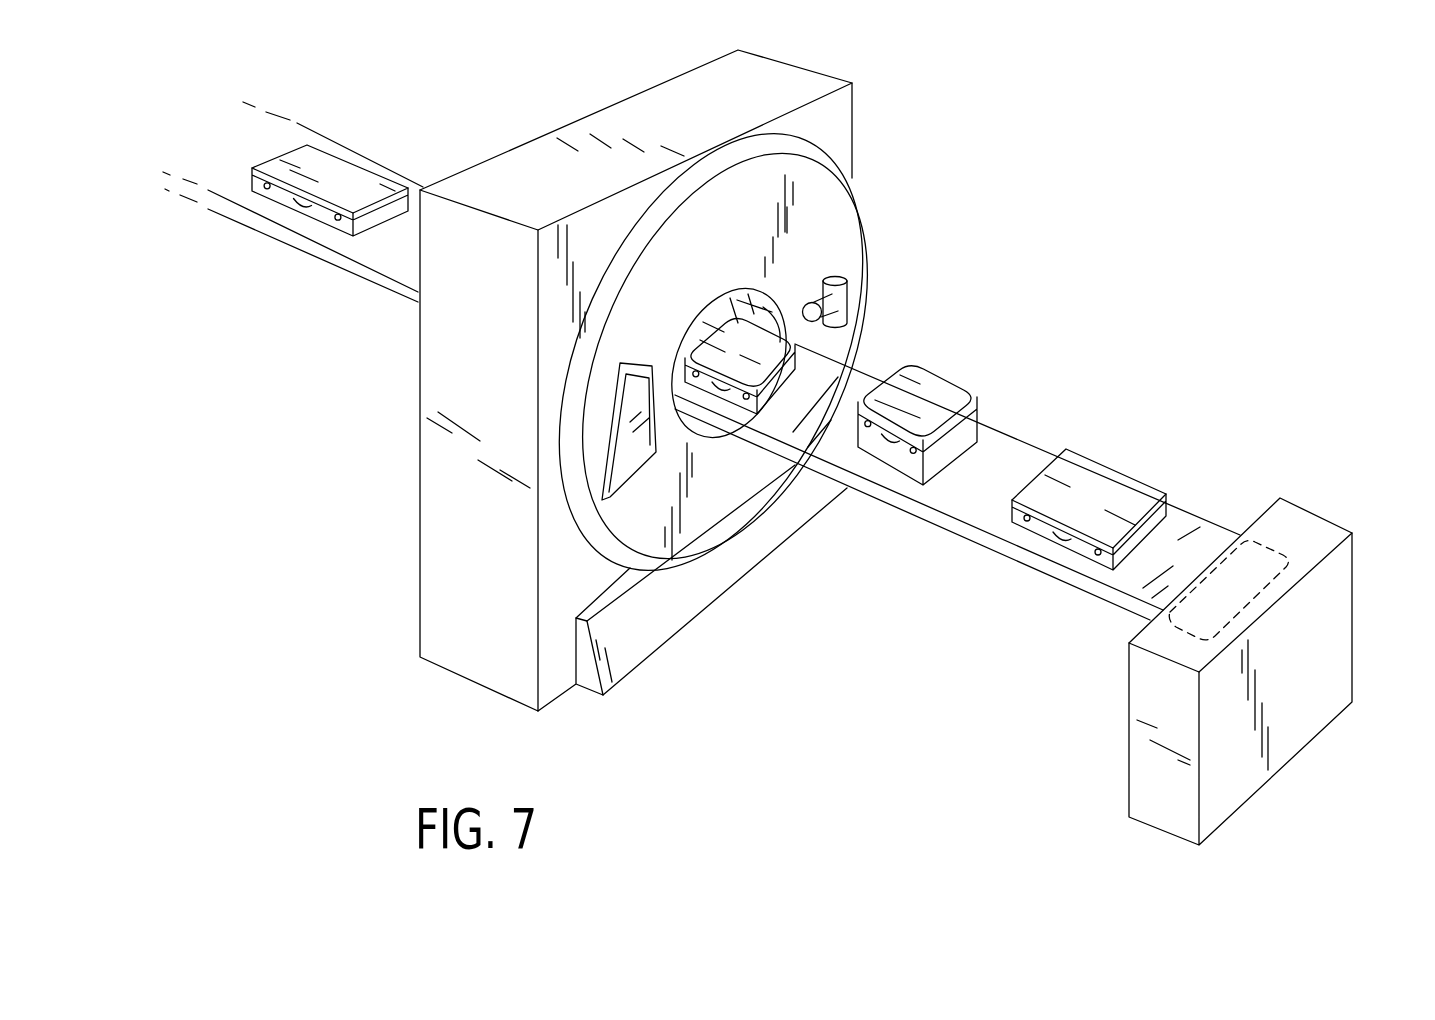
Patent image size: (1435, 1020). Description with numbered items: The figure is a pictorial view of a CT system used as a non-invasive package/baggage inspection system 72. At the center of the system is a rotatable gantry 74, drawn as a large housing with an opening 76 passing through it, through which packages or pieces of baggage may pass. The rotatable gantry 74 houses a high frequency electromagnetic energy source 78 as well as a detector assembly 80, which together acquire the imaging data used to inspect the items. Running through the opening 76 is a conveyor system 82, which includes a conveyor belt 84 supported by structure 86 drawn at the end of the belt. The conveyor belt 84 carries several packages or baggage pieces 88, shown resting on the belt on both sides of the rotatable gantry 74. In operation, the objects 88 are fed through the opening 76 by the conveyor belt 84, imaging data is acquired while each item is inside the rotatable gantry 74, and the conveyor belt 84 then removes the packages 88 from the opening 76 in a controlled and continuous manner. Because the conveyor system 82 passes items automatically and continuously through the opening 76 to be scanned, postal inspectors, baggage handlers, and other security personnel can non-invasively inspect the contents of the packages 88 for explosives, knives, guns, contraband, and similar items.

The package/baggage inspection system 72 is at (1134, 246).
The rotatable gantry 74 is at (847, 227).
The opening 76 is at (765, 297).
The high frequency electromagnetic energy source 78 is at (840, 312).
The detector assembly 80 is at (633, 468).
The conveyor system 82 is at (158, 216).
The conveyor belt 84 is at (368, 252).
The structure 86 is at (1336, 636).
The packages or baggage pieces 88 is at (345, 172).